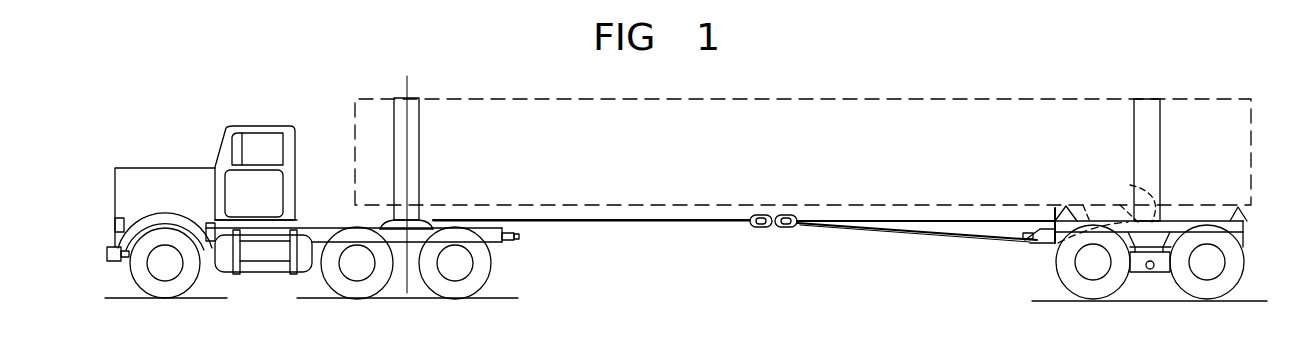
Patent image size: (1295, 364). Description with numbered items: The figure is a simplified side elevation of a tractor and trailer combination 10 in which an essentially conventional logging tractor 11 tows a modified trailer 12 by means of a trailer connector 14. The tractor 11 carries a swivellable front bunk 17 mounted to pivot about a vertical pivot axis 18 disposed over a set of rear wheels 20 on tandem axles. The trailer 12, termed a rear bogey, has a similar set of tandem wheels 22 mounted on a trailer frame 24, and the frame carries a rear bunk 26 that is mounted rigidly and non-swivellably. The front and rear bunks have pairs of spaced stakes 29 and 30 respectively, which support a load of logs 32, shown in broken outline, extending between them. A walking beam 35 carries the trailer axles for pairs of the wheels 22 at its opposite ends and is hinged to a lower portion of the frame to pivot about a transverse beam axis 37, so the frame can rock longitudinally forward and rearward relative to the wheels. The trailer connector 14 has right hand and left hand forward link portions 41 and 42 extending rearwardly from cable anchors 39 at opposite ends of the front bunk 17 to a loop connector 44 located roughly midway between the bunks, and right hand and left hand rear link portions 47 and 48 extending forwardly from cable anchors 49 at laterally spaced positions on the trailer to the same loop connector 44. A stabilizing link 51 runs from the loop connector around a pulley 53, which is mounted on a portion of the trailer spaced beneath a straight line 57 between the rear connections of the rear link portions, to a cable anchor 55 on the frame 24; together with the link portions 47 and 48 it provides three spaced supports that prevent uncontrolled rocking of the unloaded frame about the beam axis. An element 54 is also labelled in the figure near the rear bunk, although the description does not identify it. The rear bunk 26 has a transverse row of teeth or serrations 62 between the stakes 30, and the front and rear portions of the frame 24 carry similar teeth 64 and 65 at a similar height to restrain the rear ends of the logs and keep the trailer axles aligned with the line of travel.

The tractor and trailer combination 10 is at (803, 117).
The tractor 11 is at (330, 212).
The trailer 12 is at (1086, 231).
The trailer connector 14 is at (780, 242).
The front bunk 17 is at (443, 198).
The vertical pivot axis 18 is at (427, 215).
The rear wheels 20 is at (398, 308).
The tandem wheels 22 is at (1150, 294).
The trailer frame 24 is at (1173, 237).
The rear bunk 26 is at (1184, 180).
The stakes (front bunk) 29 is at (413, 124).
The stakes (rear bunk) 30 is at (1148, 142).
The load of logs 32 is at (652, 98).
The walking beam 35 is at (1167, 260).
The beam axis 37 is at (1147, 268).
The cable anchors (front bunk) 39 is at (433, 219).
The right hand forward link portion 41 is at (591, 193).
The left hand forward link portion 42 is at (590, 220).
The loop connector 44 is at (773, 227).
The right hand rear link portion 47 is at (926, 191).
The left hand rear link portion 48 is at (925, 222).
The cable anchors (trailer) 49 is at (962, 214).
The straight line 57 is at (1055, 223).
The stabilizing link 51 is at (927, 237).
The pulley 53 is at (1058, 240).
The stake guide 54 is at (1083, 205).
The cable anchor (stabilizing link) 55 is at (1120, 205).
The teeth or serrations (rear bunk) 62 is at (1130, 185).
The teeth or serrations (front of frame) 64 is at (1055, 218).
The teeth or serrations (rear of frame) 65 is at (1240, 208).